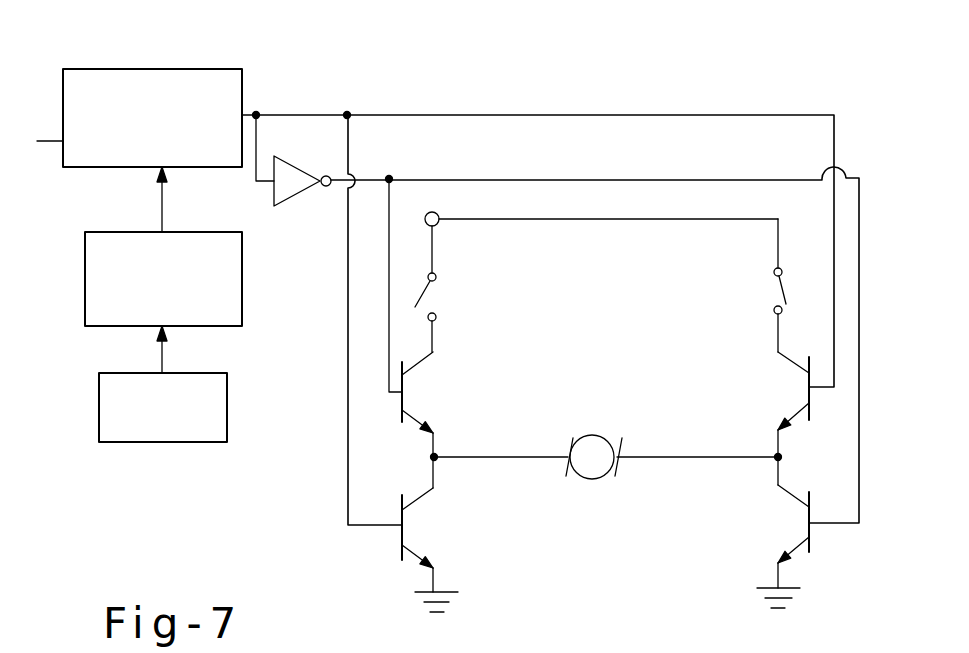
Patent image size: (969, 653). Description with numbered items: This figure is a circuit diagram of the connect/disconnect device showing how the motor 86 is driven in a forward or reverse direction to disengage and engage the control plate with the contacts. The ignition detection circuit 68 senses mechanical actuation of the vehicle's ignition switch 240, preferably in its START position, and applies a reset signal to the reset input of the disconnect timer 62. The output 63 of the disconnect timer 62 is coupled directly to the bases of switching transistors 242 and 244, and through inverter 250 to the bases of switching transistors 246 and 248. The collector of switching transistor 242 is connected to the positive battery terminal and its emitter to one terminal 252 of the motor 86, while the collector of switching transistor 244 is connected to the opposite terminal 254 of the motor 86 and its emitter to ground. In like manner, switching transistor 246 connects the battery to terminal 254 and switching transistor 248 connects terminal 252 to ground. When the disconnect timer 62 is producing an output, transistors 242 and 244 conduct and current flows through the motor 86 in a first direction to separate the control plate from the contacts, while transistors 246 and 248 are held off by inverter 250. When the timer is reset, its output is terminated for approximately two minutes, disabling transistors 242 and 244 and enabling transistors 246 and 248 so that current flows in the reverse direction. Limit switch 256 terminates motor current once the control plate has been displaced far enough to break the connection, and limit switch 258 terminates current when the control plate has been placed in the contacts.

The disconnect timer 62 is at (145, 68).
The output of the disconnect timer 63 is at (297, 115).
The inverter 250 is at (300, 193).
The ignition detection circuit 68 is at (242, 291).
The ignition switch 240 is at (227, 405).
The limit switch 258 is at (437, 290).
The limit switch 256 is at (783, 280).
The switching transistor 246 is at (400, 398).
The switching transistor 244 is at (398, 537).
The switching transistor 242 is at (813, 397).
The switching transistor 248 is at (813, 530).
The terminal of the motor 254 is at (568, 448).
The terminal of the motor 252 is at (620, 448).
The motor 86 is at (593, 480).